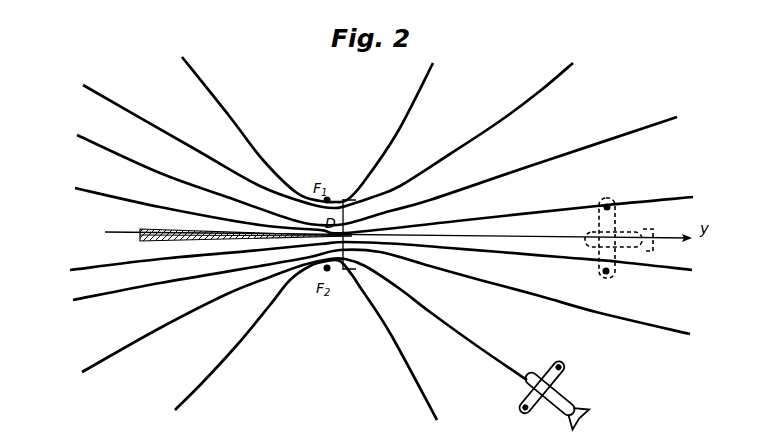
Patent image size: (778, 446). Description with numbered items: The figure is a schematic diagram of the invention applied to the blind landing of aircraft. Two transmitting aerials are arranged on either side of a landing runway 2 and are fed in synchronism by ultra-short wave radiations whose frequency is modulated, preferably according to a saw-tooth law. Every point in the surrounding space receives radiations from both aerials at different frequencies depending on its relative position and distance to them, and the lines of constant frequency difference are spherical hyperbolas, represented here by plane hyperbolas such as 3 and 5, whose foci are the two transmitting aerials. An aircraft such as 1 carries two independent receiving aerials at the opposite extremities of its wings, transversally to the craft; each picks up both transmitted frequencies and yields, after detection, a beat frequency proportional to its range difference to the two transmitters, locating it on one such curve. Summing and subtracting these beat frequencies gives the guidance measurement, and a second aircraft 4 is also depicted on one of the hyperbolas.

The aircraft 1 is at (632, 232).
The landing runway 2 is at (208, 233).
The plane hyperbola 3 is at (575, 206).
The second aircraft 4 is at (553, 378).
The plane hyperbola 5 is at (478, 345).